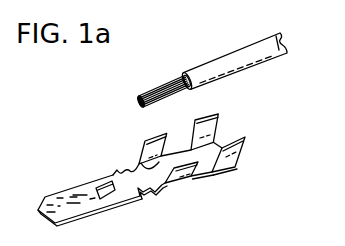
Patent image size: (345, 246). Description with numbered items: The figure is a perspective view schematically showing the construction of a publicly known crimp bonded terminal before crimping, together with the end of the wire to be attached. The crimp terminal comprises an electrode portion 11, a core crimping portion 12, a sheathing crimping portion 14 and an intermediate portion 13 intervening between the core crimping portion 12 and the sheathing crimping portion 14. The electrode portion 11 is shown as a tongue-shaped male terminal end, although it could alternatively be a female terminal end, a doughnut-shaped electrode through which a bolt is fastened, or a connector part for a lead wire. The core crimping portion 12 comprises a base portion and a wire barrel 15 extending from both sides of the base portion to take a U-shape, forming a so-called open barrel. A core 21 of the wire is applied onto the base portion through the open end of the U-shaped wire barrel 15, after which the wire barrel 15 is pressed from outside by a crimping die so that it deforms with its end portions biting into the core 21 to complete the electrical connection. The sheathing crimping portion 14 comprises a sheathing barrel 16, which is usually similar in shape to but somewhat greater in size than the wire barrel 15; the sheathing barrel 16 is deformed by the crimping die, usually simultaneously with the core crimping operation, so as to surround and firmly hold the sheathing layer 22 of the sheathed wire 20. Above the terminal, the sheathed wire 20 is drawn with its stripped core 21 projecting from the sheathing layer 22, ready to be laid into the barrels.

The electrode portion 11 is at (55, 197).
The core crimping portion 12 is at (142, 168).
The intermediate portion 13 is at (178, 152).
The sheathing crimping portion 14 is at (223, 130).
The wire barrel 15 is at (190, 183).
The sheathing barrel 16 is at (240, 150).
The sheathed wire 20 is at (242, 71).
The core 21 is at (154, 86).
The sheathing layer 22 is at (282, 53).